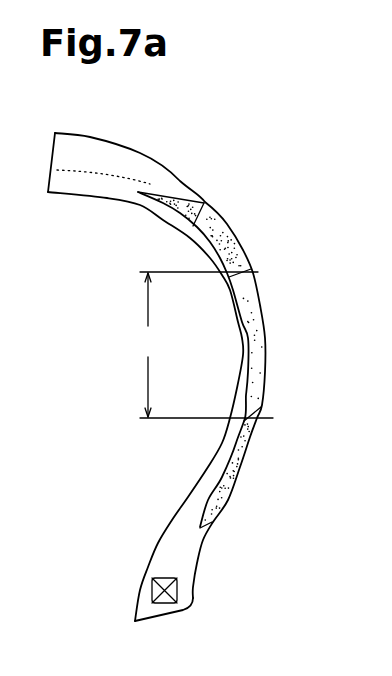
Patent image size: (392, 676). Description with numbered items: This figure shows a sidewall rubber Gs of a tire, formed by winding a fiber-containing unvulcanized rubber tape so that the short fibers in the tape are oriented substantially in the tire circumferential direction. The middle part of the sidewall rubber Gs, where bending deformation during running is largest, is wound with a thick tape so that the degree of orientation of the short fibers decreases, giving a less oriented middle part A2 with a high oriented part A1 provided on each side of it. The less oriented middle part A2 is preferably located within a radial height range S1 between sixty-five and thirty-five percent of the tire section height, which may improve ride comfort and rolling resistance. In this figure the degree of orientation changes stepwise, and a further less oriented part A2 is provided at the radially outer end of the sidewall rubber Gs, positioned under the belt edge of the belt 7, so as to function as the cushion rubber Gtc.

The tread portion 7 is at (112, 176).
The sidewall rubber Gs is at (268, 290).
The cushion rubber Gtc is at (187, 203).
The high oriented part A1 is at (227, 238).
The less oriented middle part A2 is at (253, 350).
The radial height range S1 is at (201, 345).